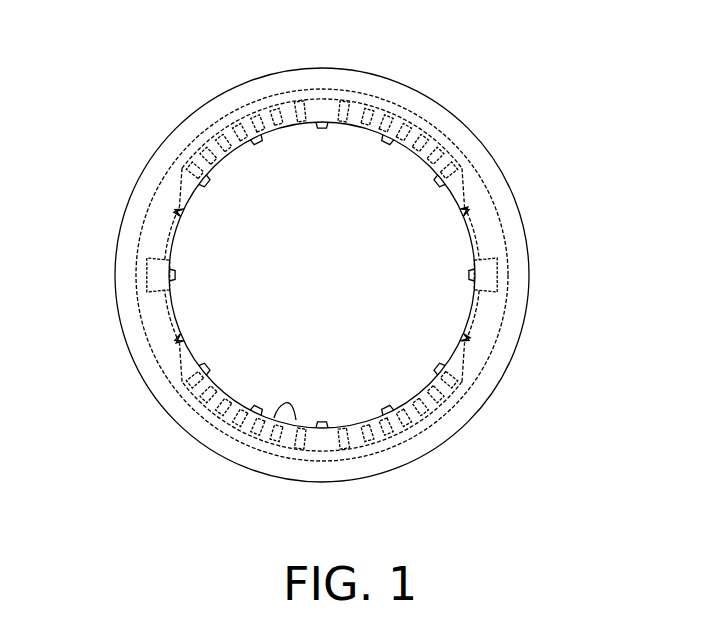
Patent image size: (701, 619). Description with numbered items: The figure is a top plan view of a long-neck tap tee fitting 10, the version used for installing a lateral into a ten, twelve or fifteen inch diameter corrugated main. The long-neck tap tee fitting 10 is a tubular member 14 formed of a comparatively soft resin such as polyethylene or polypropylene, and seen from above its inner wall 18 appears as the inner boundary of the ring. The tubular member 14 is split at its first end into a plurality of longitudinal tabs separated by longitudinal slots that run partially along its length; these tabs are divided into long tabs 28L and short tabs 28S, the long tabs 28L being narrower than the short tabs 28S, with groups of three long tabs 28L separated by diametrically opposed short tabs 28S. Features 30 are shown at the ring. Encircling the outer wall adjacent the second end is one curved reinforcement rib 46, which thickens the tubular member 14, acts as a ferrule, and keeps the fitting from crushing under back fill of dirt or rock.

The long-neck tap tee fitting 10 is at (351, 267).
The tubular member 14 is at (470, 158).
The inner wall 18 is at (296, 420).
The short tabs 28S is at (167, 245).
The long tabs 28L is at (448, 405).
The window 30 is at (287, 103).
The curved reinforcement rib 46 is at (390, 467).